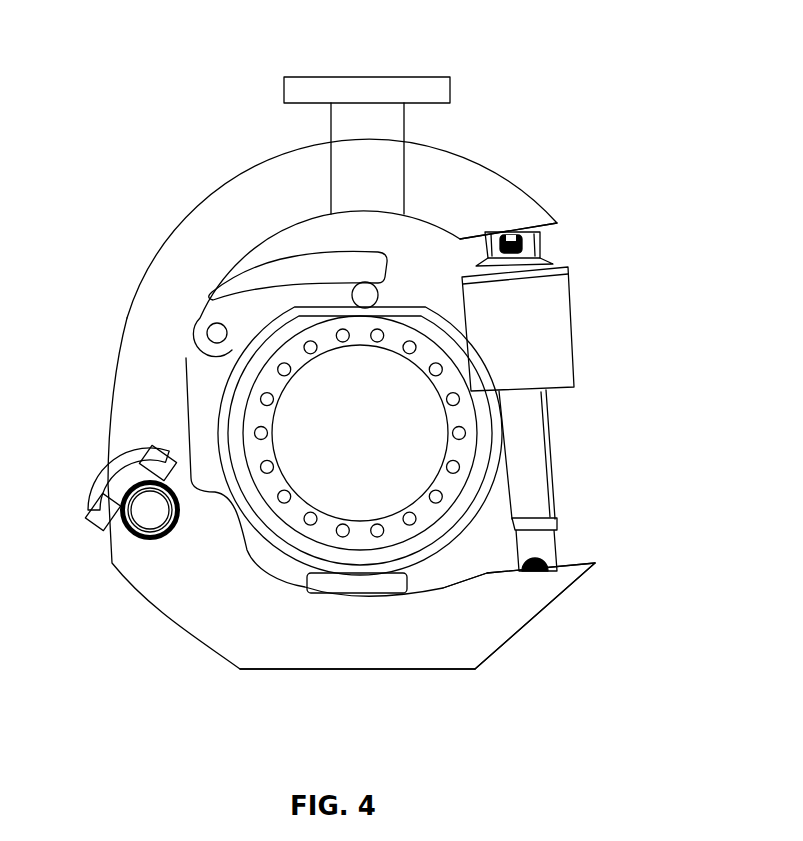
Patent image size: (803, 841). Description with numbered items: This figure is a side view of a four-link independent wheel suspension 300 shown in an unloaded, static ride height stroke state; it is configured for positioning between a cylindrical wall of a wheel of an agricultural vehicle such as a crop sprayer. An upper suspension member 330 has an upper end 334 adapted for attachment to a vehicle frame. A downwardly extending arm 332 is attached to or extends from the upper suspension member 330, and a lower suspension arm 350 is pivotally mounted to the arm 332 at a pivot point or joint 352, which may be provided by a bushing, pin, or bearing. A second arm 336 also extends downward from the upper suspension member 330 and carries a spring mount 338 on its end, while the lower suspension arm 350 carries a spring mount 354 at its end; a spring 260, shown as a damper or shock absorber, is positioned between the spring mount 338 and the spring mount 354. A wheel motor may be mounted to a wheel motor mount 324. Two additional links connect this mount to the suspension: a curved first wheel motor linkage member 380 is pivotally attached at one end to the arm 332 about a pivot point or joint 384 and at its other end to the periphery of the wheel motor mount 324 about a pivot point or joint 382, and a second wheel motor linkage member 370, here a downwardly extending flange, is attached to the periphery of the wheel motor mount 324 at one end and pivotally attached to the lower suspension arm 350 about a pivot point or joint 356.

The four-link independent wheel suspension 300 is at (220, 64).
The upper suspension member 330 is at (342, 106).
The upper end 334 is at (368, 92).
The downwardly extending arm 332 is at (180, 265).
The second arm 336 is at (497, 193).
The spring mount 338 is at (545, 230).
The spring 260 is at (563, 330).
The first wheel motor linkage member 380 is at (240, 293).
The pivot point or joint 382 is at (373, 297).
The pivot point or joint 384 is at (213, 333).
The wheel motor mount 324 is at (293, 513).
The second wheel motor linkage member 370 is at (332, 578).
The pivot point or joint 352 is at (143, 510).
The spring mount 354 is at (583, 570).
The lower suspension arm 350 is at (502, 628).
The pivot point or joint 356 is at (407, 645).